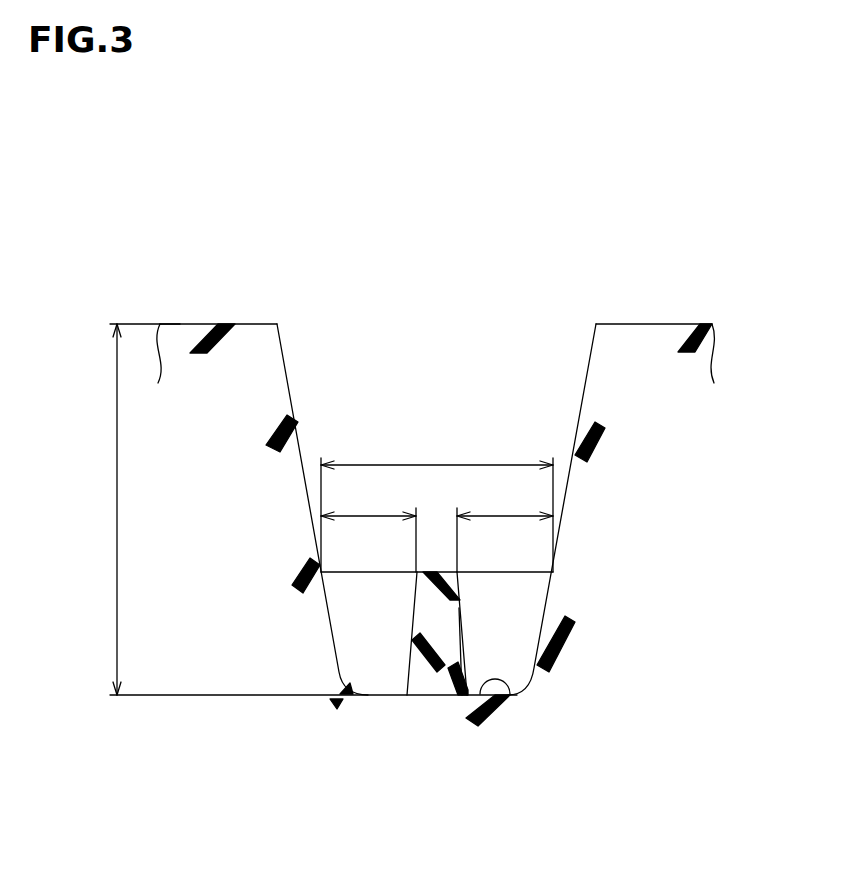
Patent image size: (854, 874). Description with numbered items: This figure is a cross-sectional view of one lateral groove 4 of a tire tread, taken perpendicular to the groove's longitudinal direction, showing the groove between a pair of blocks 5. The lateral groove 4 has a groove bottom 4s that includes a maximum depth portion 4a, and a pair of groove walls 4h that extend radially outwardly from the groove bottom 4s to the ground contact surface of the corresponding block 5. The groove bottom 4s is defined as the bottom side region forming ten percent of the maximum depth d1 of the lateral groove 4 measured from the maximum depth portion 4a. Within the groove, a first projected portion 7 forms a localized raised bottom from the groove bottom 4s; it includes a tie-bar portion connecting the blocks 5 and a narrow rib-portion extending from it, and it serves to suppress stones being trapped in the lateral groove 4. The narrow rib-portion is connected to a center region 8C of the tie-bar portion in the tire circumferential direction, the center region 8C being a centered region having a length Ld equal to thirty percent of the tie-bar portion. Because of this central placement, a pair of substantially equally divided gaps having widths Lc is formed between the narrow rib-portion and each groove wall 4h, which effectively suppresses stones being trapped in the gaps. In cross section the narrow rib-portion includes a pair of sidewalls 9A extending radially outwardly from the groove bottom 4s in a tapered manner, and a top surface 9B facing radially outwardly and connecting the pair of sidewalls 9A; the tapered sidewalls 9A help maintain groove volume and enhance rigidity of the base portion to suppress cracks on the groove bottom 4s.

The block 5 is at (193, 324).
The groove wall 4h is at (285, 372).
The lateral groove 4 is at (435, 368).
The maximum depth portion 4a is at (433, 693).
The groove bottom 4s is at (511, 691).
The first projected portion 7 is at (438, 640).
The sidewall 9A is at (430, 618).
The top surface 9B is at (440, 570).
The center region 8C is at (431, 702).
The maximum depth d1 is at (130, 509).
The length of center region Ld is at (440, 462).
The gap width Lc is at (367, 513).